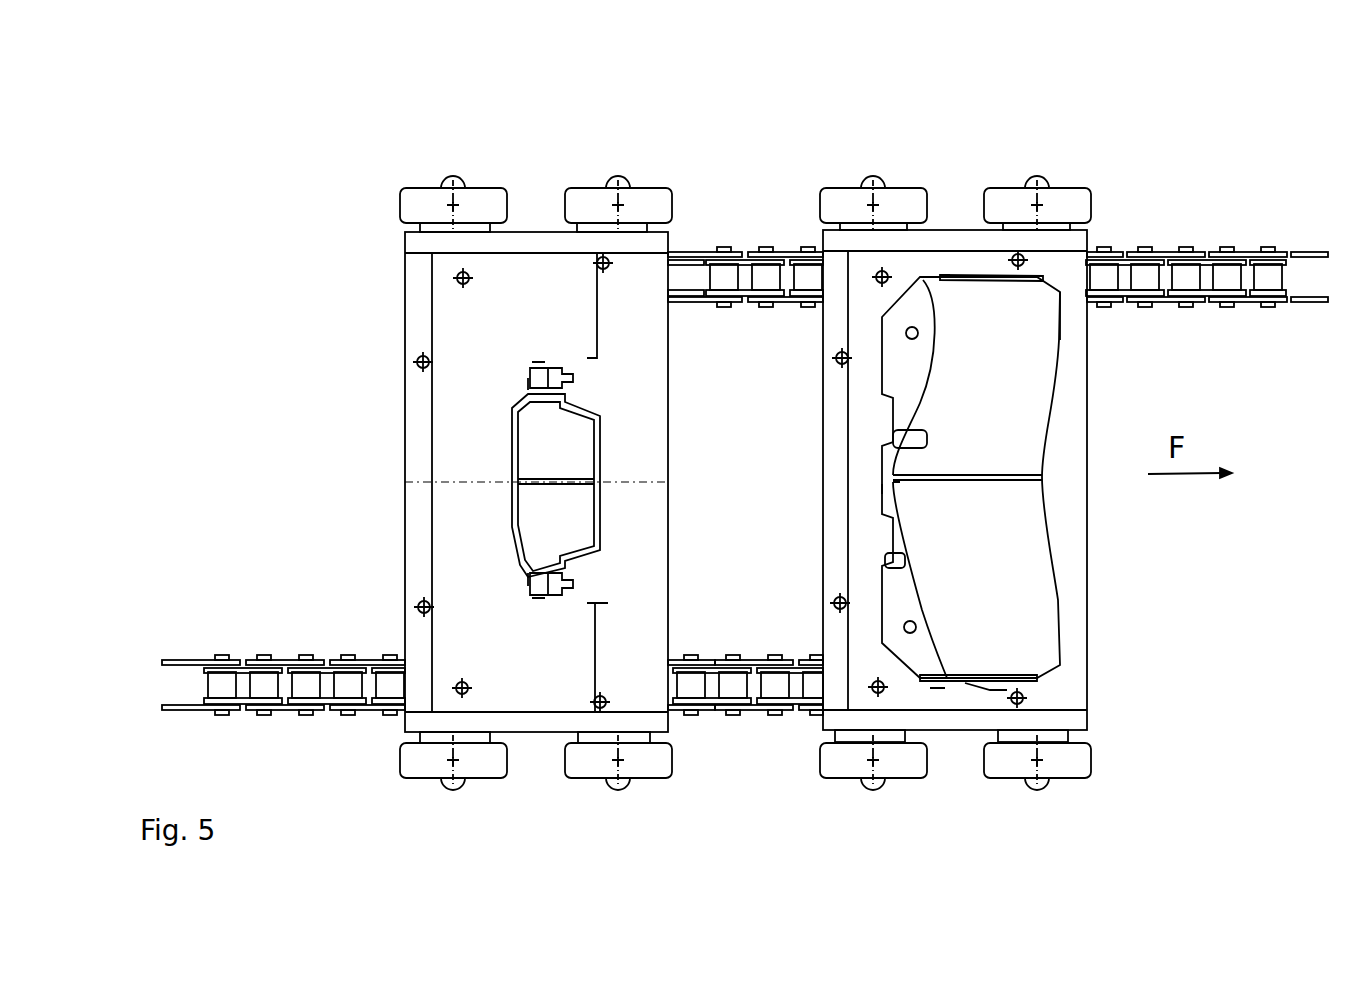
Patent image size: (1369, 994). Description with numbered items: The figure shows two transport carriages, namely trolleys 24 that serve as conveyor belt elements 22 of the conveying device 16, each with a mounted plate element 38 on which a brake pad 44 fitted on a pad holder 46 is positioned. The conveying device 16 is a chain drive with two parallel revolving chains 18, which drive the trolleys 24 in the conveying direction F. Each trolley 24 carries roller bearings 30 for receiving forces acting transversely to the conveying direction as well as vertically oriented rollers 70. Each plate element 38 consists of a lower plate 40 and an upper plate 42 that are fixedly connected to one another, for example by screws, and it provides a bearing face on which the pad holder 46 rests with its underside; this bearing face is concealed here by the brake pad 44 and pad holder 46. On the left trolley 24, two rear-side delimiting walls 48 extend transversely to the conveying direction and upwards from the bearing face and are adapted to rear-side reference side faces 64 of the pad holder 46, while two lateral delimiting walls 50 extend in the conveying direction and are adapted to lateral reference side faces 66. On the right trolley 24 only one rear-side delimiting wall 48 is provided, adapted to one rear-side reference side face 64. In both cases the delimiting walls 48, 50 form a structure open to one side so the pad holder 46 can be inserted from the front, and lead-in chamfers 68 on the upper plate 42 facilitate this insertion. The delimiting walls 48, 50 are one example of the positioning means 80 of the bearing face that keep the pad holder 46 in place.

The conveying device 16 is at (745, 459).
The chain 18 is at (305, 690).
The conveyor belt element 22 is at (746, 407).
The trolley 24 is at (538, 176).
The roller bearing 30 is at (425, 225).
The plate element 38 is at (647, 602).
The lower plate 40 is at (627, 652).
The upper plate 42 is at (513, 677).
The brake pad 44 is at (543, 443).
The pad holder 46 is at (541, 352).
The rear-side delimiting wall 48 is at (563, 388).
The lateral delimiting wall 50 is at (530, 377).
The rear-side reference side face 64 is at (520, 385).
The lateral reference side face 66 is at (535, 353).
The lead-in chamfer 68 is at (593, 367).
The roller 70 is at (437, 200).
The positioning means 80 is at (571, 365).